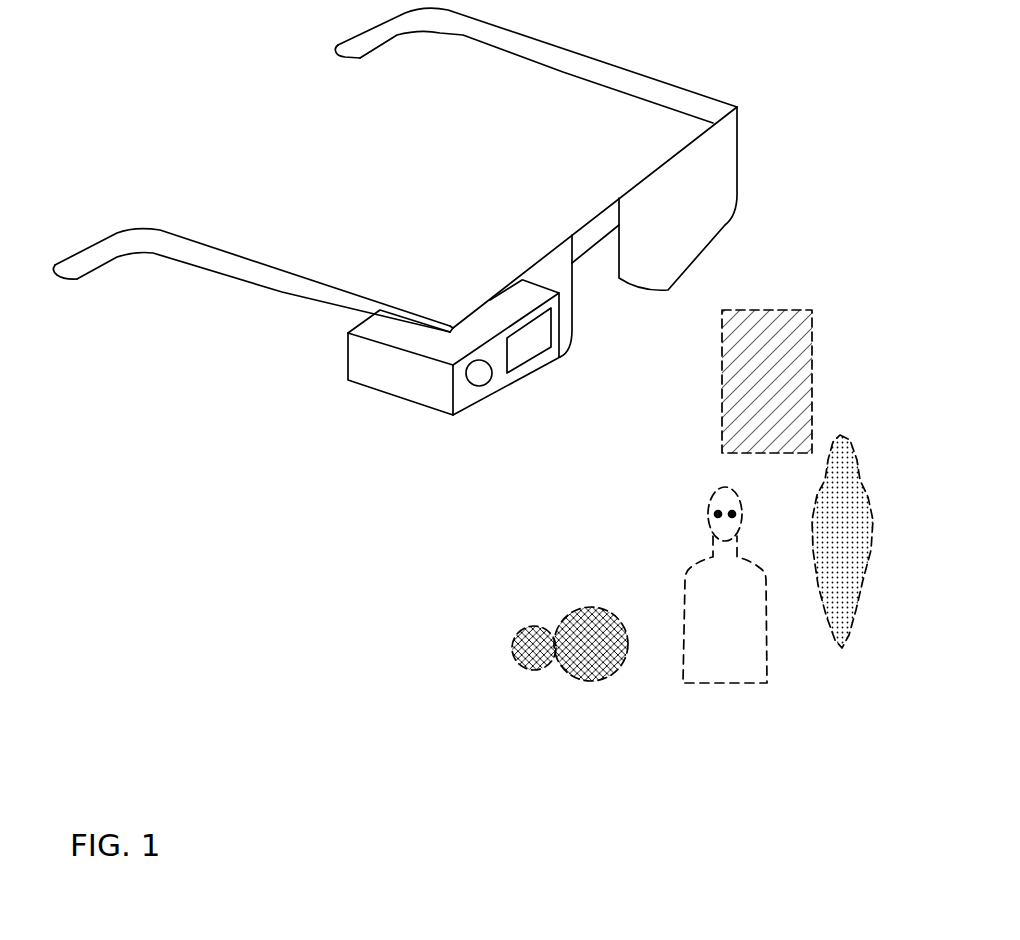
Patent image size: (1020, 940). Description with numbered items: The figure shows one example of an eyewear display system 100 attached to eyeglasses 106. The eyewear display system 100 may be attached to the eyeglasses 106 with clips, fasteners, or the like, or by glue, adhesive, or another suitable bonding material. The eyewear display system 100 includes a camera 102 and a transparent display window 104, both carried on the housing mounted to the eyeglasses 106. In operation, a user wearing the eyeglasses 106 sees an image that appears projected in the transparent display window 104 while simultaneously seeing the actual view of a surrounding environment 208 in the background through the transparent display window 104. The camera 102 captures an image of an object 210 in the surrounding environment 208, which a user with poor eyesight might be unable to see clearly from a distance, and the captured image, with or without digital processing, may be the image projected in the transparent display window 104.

The eyewear display system 100 is at (396, 240).
The camera 102 is at (477, 383).
The transparent display window 104 is at (543, 336).
The eyeglasses 106 is at (642, 72).
The surrounding environment 208 is at (587, 722).
The object 210 is at (767, 660).